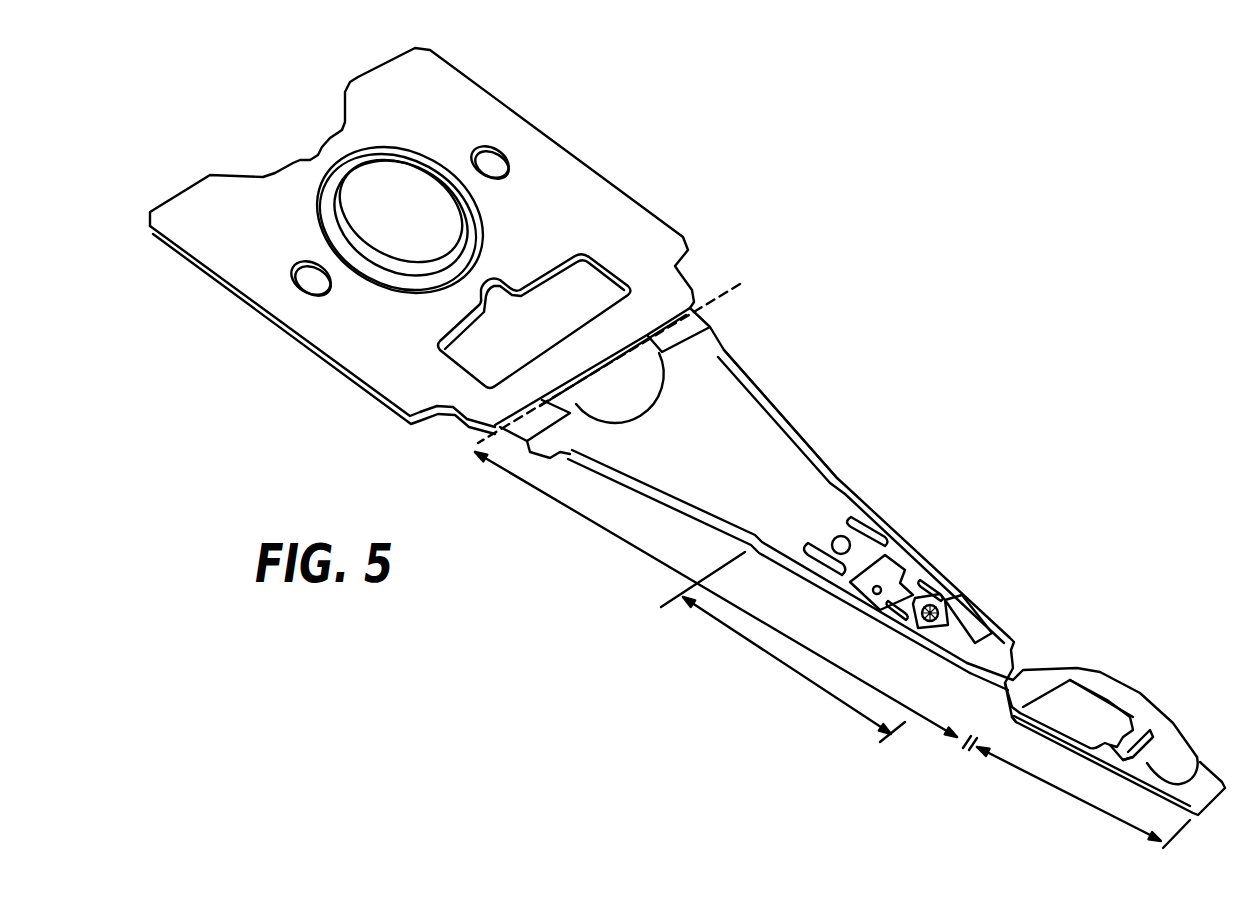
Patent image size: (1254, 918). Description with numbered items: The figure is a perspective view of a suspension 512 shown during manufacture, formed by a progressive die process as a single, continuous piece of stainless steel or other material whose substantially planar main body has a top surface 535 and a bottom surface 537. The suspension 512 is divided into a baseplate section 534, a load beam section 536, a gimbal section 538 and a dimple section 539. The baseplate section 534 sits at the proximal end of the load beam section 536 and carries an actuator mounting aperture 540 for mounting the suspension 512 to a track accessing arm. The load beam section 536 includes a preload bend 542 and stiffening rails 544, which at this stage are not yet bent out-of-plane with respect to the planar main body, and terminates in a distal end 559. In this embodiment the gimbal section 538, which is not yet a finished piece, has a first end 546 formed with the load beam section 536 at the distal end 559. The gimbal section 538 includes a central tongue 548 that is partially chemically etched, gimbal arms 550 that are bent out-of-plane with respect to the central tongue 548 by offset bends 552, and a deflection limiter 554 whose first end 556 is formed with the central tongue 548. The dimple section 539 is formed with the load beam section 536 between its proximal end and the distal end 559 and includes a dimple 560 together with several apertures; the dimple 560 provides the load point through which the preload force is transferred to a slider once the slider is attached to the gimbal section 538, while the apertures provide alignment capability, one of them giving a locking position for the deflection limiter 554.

The suspension 512 is at (892, 220).
The baseplate section 534 is at (477, 448).
The top surface 535 is at (868, 549).
The load beam section 536 is at (651, 555).
The bottom surface 537 is at (900, 645).
The gimbal section 538 is at (1010, 766).
The dimple section 539 is at (770, 655).
The actuator mounting aperture 540 is at (435, 153).
The preload bend 542 is at (711, 306).
The stiffening rails 544 is at (876, 524).
The first end 546 is at (1012, 670).
The central tongue 548 is at (1083, 715).
The gimbal arms 550 is at (1148, 782).
The offset bends 552 is at (1026, 698).
The deflection limiter 554 is at (1135, 745).
The first end 556 is at (1118, 738).
The distal end 559 is at (1012, 707).
The dimple 560 is at (940, 608).